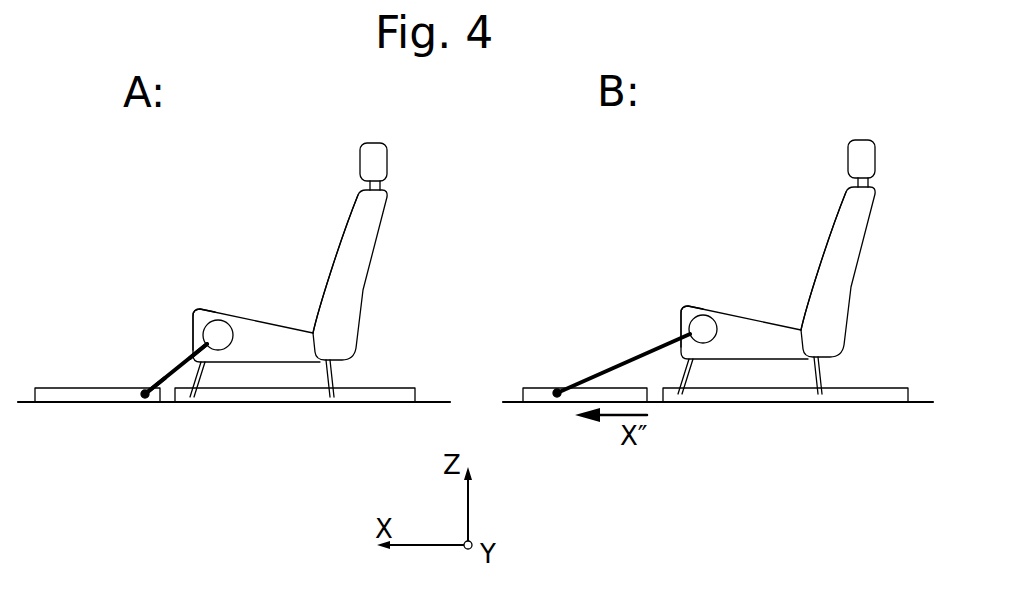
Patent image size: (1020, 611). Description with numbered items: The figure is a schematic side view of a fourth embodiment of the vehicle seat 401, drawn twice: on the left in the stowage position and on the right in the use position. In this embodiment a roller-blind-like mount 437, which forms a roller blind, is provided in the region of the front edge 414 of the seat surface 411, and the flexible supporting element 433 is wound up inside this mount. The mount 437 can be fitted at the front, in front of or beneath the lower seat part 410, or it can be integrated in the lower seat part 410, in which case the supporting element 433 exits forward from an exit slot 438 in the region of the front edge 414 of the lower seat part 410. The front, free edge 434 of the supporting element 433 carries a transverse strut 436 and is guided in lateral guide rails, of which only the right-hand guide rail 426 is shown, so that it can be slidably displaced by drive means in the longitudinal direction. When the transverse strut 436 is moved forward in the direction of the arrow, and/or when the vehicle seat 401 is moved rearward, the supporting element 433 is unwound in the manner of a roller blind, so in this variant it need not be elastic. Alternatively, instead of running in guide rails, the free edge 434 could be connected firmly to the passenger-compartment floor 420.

The vehicle seat 401 is at (532, 254).
The lower seat part 410 is at (532, 268).
The seat surface 411 is at (294, 322).
The front edge 414 is at (193, 322).
The passenger-compartment floor 420 is at (433, 392).
The guide rail 426 is at (53, 386).
The flexible supporting element 433 is at (376, 348).
The front free edge 434 is at (144, 389).
The transverse strut 436 is at (138, 397).
The roller-blind-like mount 437 is at (233, 347).
The exit slot 438 is at (191, 338).